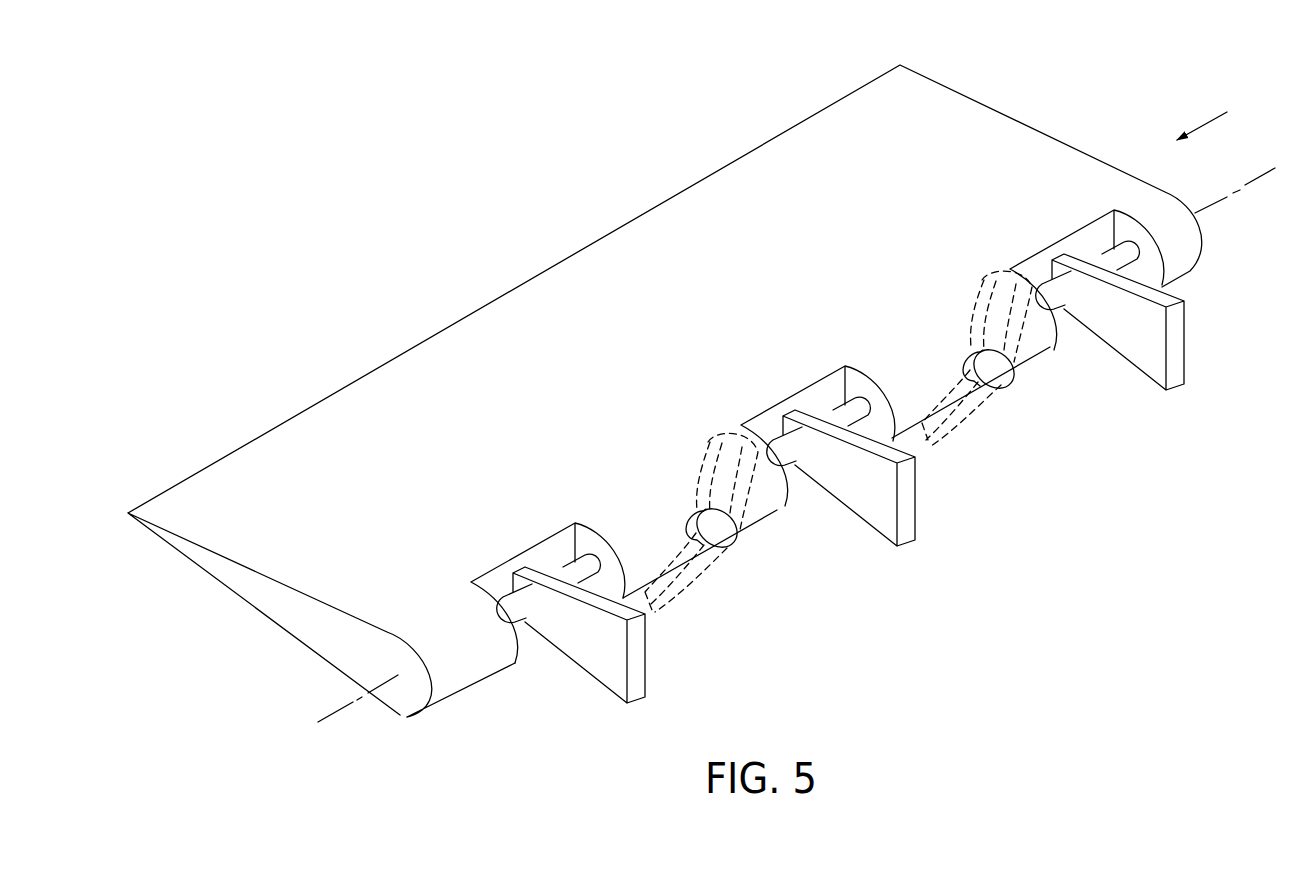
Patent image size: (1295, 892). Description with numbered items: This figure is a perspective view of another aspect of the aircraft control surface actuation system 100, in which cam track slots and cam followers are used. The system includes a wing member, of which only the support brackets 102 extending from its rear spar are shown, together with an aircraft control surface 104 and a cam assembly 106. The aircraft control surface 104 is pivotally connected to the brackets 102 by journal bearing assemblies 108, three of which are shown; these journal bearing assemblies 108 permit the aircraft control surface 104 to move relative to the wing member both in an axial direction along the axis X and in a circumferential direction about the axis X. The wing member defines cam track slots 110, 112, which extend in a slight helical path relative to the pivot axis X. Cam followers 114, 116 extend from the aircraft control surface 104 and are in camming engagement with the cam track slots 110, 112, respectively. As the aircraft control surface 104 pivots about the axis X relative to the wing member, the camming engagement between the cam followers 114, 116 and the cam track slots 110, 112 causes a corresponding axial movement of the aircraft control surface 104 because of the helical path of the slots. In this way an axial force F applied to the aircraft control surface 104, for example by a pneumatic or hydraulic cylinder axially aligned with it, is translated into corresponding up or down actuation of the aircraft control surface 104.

The aircraft control surface actuation system 100 is at (393, 260).
The support bracket 102 is at (615, 678).
The aircraft control surface 104 is at (597, 262).
The cam assembly 106 is at (690, 447).
The journal bearing assembly 108 is at (527, 532).
The cam track slot 110 is at (697, 583).
The cam track slot 112 is at (968, 432).
The cam follower 114 is at (723, 533).
The cam follower 116 is at (998, 377).
The axial force F is at (1210, 121).
The axis X is at (1245, 183).